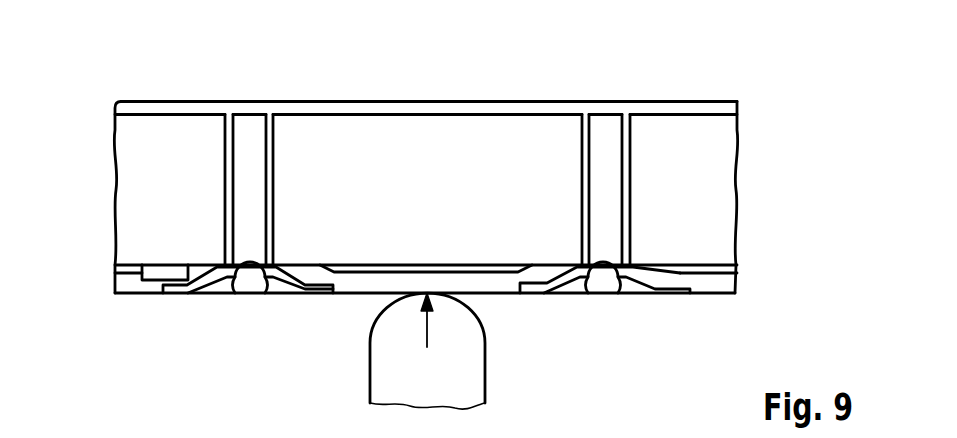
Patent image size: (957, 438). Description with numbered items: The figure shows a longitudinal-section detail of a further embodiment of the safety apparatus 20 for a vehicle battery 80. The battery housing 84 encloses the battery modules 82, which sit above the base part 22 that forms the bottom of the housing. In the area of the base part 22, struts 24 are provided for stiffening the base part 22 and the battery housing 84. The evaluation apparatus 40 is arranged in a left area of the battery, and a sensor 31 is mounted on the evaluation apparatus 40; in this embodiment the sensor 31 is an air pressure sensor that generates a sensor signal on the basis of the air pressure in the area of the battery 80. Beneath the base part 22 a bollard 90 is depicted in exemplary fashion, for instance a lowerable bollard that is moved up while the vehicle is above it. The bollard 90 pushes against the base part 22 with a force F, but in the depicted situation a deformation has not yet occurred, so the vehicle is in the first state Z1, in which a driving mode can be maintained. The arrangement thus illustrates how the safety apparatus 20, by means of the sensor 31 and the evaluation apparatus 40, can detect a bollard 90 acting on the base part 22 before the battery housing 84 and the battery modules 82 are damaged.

The battery 80 is at (170, 82).
The battery housing 84 is at (373, 101).
The battery module 82 is at (515, 128).
The first state Z1 is at (754, 80).
The evaluation apparatus 40 is at (137, 190).
The sensor 31 is at (153, 273).
The strut 24 is at (210, 278).
The safety apparatus 20 is at (350, 318).
The base part 22 is at (707, 293).
The bollard 90 is at (468, 382).
The force F is at (427, 328).